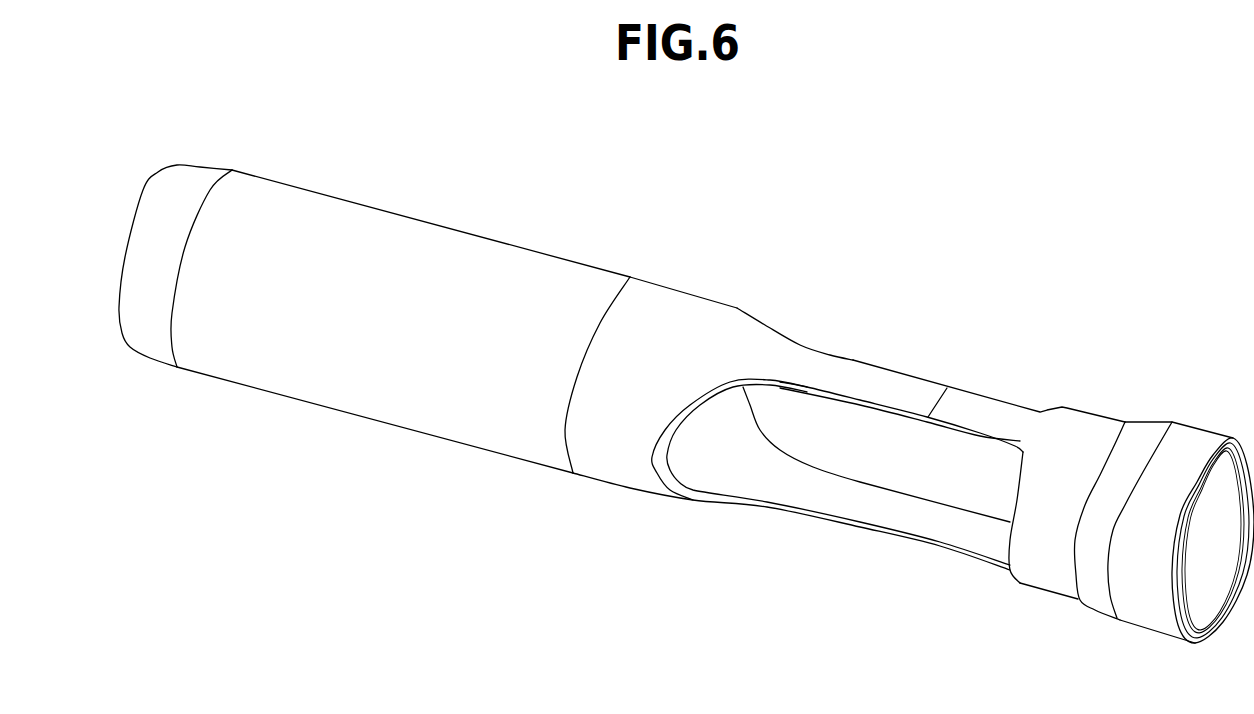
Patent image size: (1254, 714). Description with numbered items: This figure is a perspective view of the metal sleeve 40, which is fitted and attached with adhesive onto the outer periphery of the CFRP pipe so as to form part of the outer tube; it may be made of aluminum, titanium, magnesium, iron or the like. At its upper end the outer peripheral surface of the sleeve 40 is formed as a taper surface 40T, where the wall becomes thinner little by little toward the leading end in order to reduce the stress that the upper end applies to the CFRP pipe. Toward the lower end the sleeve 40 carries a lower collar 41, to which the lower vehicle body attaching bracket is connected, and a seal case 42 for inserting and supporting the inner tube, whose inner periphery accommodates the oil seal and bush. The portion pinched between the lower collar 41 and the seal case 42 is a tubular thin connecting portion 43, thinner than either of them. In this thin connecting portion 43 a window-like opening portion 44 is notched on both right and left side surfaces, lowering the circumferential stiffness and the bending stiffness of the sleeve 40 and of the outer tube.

The sleeve 40 is at (547, 241).
The taper surface 40T is at (193, 177).
The lower collar 41 is at (377, 230).
The seal case 42 is at (1197, 445).
The thin connecting portion 43 is at (915, 390).
The opening portion 44 is at (833, 395).